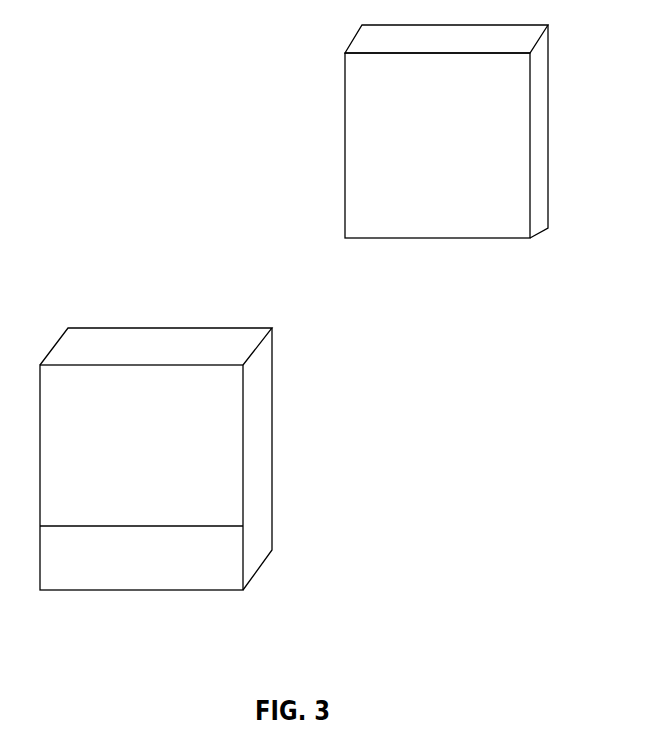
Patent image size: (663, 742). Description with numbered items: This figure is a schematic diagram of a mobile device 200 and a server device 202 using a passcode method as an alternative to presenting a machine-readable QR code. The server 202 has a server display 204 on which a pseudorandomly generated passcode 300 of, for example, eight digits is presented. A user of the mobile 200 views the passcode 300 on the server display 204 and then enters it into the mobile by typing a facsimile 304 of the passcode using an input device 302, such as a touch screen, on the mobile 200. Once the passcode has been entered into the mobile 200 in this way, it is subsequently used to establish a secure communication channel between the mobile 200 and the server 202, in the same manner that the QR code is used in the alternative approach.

The mobile device 200 is at (272, 457).
The server device 202 is at (362, 45).
The server display 204 is at (365, 108).
The passcode 300 is at (370, 210).
The input device 302 is at (218, 541).
The facsimile 304 is at (180, 566).